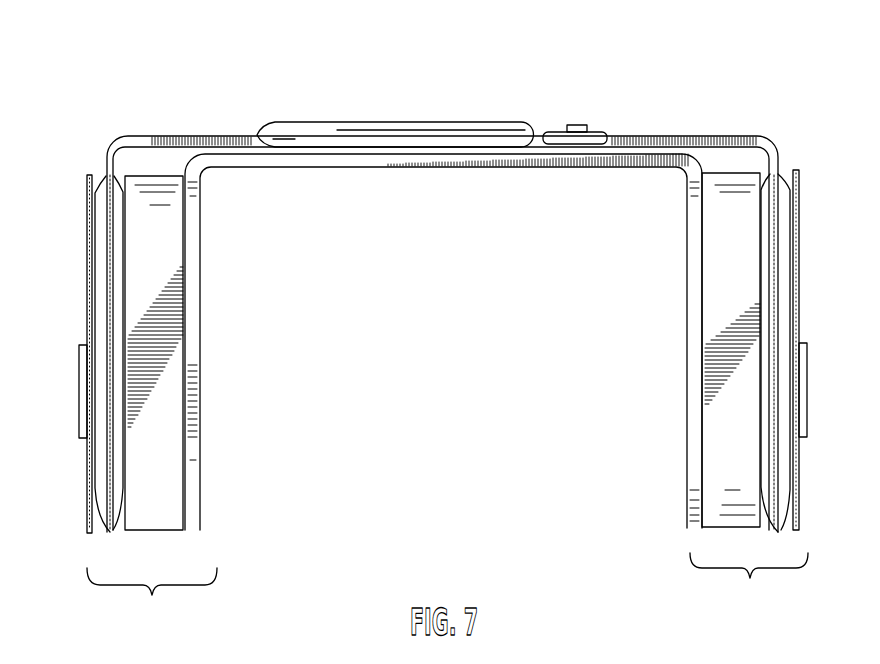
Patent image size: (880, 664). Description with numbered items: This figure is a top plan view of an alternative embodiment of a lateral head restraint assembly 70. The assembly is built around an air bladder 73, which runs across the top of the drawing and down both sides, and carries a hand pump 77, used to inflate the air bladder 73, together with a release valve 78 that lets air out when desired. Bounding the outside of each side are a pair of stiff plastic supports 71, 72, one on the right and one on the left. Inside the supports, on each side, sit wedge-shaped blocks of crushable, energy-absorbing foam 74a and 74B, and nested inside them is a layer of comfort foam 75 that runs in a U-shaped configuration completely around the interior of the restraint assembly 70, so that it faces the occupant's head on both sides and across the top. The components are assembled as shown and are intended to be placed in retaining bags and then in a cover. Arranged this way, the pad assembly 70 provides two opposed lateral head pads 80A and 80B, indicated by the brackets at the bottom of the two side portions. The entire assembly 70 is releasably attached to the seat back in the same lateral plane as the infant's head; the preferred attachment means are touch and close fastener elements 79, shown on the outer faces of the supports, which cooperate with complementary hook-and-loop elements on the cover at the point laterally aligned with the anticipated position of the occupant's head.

The lateral head restraint assembly 70 is at (589, 77).
The stiff plastic support 71 is at (798, 220).
The stiff plastic support 72 is at (85, 208).
The air bladder 73 is at (754, 137).
The wedge-shaped block of crushable energy-absorbing foam 74a is at (718, 522).
The wedge-shaped block of crushable energy-absorbing foam 74B is at (160, 522).
The layer of comfort foam 75 is at (687, 488).
The hand pump 77 is at (456, 132).
The release valve 78 is at (590, 131).
The touch and close fastener element 79 is at (78, 402).
The lateral head pad 80A is at (749, 580).
The lateral head pad 80B is at (152, 601).